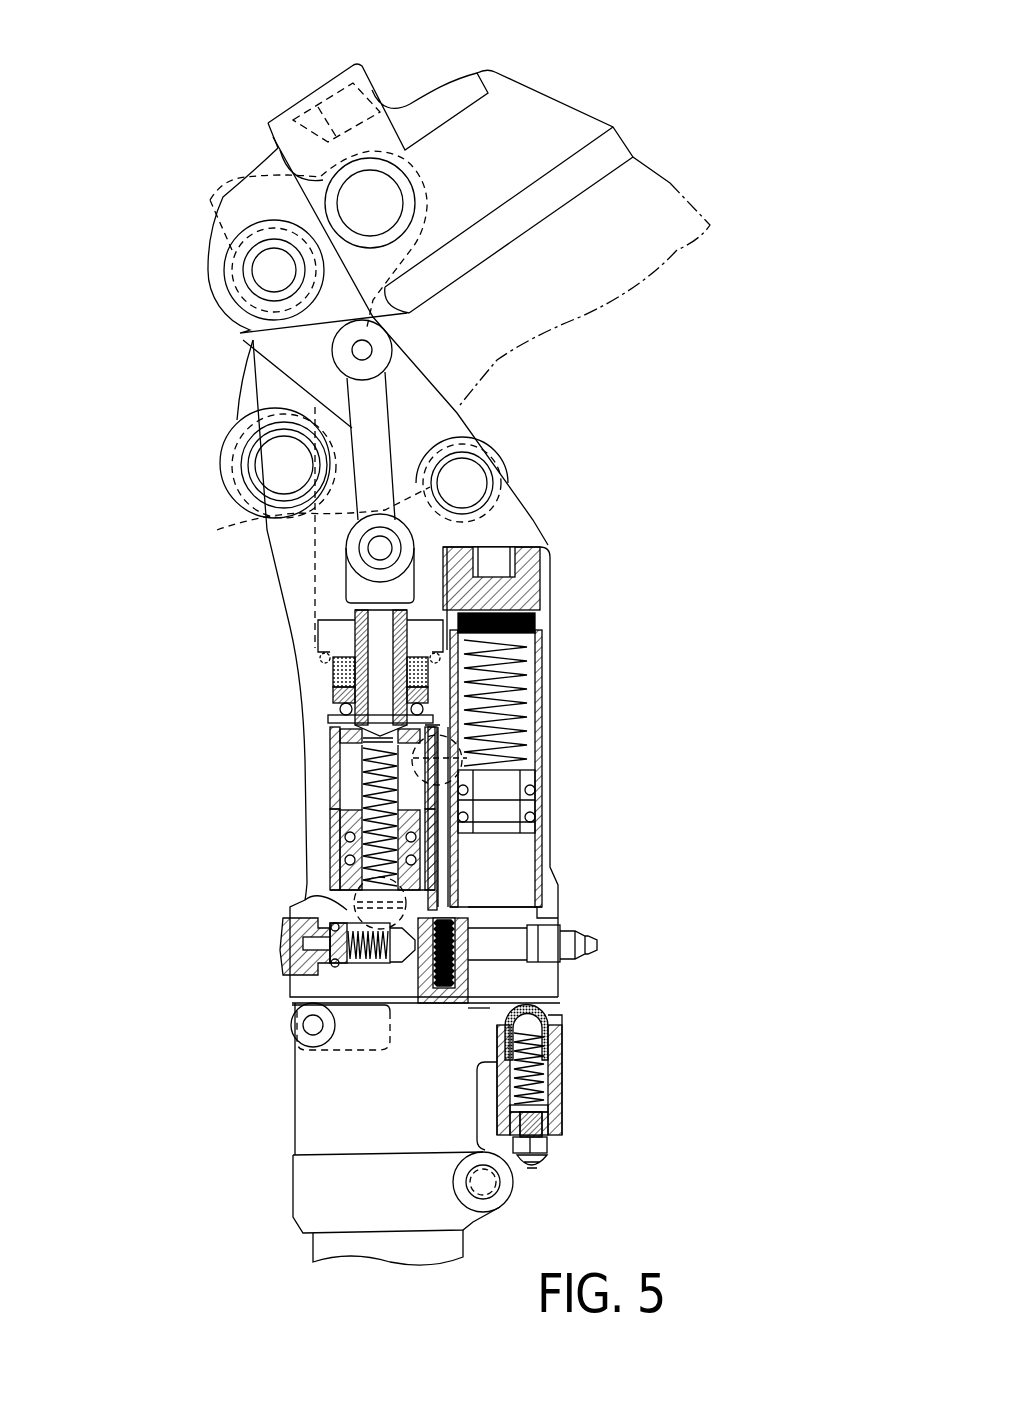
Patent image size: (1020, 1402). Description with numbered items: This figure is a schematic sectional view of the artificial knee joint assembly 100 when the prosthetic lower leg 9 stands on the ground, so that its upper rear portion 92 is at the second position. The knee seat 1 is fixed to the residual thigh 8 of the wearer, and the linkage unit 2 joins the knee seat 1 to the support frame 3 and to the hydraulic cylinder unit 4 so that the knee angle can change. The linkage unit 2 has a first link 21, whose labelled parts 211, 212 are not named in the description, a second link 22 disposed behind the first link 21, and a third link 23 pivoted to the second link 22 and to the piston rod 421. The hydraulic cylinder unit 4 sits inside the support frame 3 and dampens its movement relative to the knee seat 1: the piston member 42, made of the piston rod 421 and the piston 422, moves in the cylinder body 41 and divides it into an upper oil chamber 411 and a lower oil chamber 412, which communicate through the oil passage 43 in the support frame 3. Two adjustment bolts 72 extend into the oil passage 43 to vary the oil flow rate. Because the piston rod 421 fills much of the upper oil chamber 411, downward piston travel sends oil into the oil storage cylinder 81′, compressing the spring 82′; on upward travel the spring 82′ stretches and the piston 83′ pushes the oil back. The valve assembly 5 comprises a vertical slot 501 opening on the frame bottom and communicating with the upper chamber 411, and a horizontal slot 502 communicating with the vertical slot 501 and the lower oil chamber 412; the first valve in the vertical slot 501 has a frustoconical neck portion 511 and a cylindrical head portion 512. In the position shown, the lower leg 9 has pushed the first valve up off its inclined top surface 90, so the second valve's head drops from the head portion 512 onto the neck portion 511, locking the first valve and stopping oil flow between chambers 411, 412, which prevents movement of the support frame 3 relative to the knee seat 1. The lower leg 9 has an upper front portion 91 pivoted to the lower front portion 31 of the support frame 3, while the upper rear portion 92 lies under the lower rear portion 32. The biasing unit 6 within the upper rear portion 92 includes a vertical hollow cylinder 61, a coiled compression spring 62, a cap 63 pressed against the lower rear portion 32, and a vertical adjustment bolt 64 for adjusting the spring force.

The artificial knee joint assembly 100 is at (662, 103).
The knee seat 1 is at (518, 122).
The residual thigh 8 is at (662, 210).
The linkage unit 2 is at (176, 323).
The first link 21 is at (268, 383).
The plate outline 211 is at (228, 225).
The pivot 212 is at (350, 545).
The second link 22 is at (402, 380).
The third link 23 is at (372, 415).
The support frame 3 is at (283, 563).
The hydraulic cylinder unit 4 is at (317, 685).
The cylinder body 41 is at (330, 770).
The upper oil chamber 411 is at (330, 745).
The lower oil chamber 412 is at (340, 880).
The piston member 42 is at (363, 790).
The piston rod 421 is at (340, 630).
The piston 422 is at (350, 820).
The oil passage 43 is at (460, 843).
The second upper horizontal adjustment bolt 72 is at (345, 890).
The spring 82′ is at (525, 690).
The piston 83′ is at (525, 805).
The oil storage cylinder 81′ is at (540, 880).
The valve assembly 5 is at (376, 983).
The vertical slot 501 is at (458, 918).
The horizontal slot 502 is at (287, 902).
The frustoconical neck portion 511 is at (570, 950).
The cylindrical head portion 512 is at (575, 935).
The lower rear portion 32 is at (540, 982).
The prosthetic lower leg 9 is at (320, 1098).
The lower front portion 31 is at (300, 1015).
The upper front portion 91 is at (300, 1050).
The inclined top surface 90 is at (473, 1012).
The biasing unit 6 is at (577, 1113).
The upper rear portion 92 is at (563, 1033).
The cap 63 is at (560, 1013).
The coiled compression spring 62 is at (563, 1077).
The vertical hollow cylinder 61 is at (563, 1130).
The vertical adjustment bolt 64 is at (545, 1162).